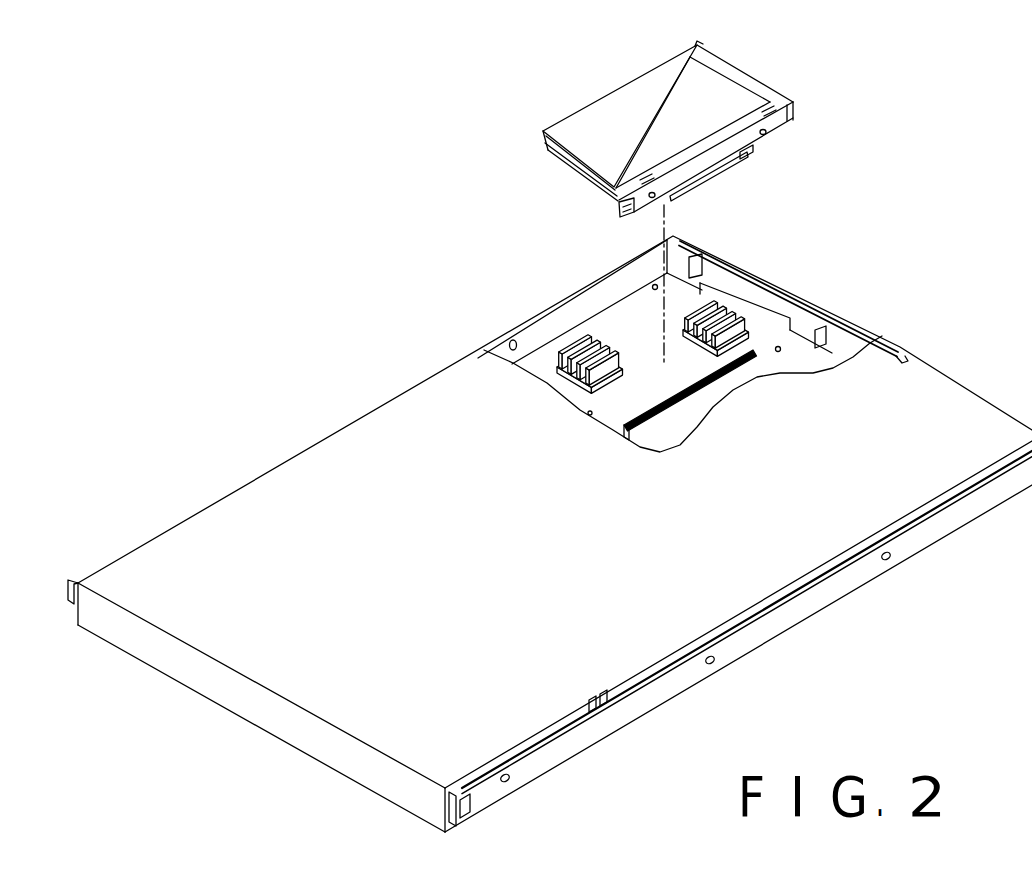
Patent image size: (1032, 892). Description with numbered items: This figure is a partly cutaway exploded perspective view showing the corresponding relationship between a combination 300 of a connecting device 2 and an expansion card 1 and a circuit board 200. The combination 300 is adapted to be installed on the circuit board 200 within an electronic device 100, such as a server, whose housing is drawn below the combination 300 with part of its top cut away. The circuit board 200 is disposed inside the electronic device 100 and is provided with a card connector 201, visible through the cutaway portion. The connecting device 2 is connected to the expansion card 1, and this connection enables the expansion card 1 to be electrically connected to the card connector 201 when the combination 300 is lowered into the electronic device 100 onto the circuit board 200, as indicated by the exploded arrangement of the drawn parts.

The electronic device 100 is at (550, 518).
The circuit board 200 is at (680, 306).
The card connector 201 is at (762, 398).
The combination 300 is at (640, 124).
The expansion card 1 is at (592, 131).
The connecting device 2 is at (765, 88).